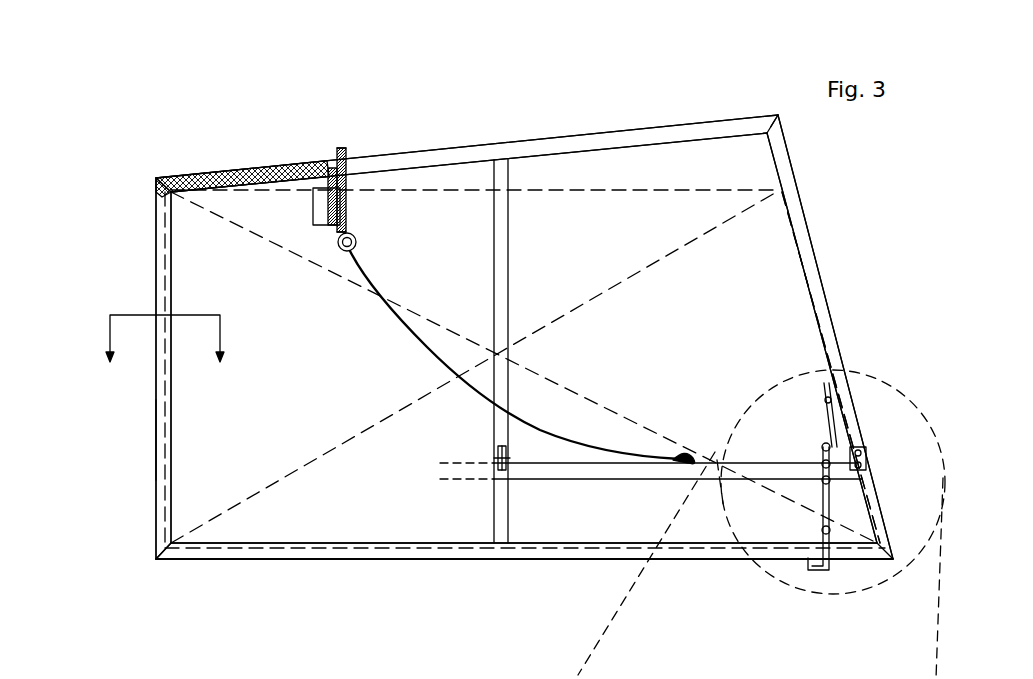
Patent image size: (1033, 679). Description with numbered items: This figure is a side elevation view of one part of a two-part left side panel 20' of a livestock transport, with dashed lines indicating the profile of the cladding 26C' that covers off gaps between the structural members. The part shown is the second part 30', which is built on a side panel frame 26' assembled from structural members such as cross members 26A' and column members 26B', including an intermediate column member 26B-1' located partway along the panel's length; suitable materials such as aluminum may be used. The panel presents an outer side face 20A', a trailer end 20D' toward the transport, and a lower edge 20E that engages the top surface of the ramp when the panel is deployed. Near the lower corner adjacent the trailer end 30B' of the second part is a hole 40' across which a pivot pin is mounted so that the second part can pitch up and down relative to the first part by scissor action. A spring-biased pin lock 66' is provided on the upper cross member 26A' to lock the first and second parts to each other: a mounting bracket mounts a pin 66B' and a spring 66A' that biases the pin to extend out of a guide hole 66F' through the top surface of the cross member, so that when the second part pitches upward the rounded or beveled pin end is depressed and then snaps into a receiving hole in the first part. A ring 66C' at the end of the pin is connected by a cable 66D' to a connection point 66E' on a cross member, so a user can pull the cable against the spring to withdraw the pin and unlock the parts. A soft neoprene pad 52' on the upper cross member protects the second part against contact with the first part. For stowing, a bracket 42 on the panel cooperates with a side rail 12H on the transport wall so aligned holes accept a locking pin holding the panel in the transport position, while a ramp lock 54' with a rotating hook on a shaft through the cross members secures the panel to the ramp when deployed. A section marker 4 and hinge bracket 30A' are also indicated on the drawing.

The side panel 20' is at (89, 57).
The second part 30' is at (770, 49).
The side panel frame 26' is at (524, 305).
The cross member 26A' is at (524, 345).
The column member 26B' is at (541, 337).
The cladding 26C' is at (594, 329).
The intermediate column member 26B-1' is at (571, 351).
The outer side face 20A' is at (711, 298).
The trailer end 20D' is at (114, 209).
The lower edge 20E is at (567, 560).
The hole 40' is at (187, 576).
The trailer end of second part 30B' is at (92, 440).
The hinge bracket 30A' is at (881, 370).
The pad 52' is at (242, 140).
The spring-biased pin lock 66' is at (310, 147).
The spring 66A' is at (390, 214).
The pin 66B' is at (365, 104).
The pull ring 66C' is at (396, 242).
The cable 66D' is at (515, 355).
The connection point 66E' is at (670, 422).
The guide hole 66F' is at (368, 158).
The bracket 42 is at (512, 460).
The side rail 12H is at (443, 463).
The ramp lock 54' is at (864, 506).
The section line 4 is at (165, 356).